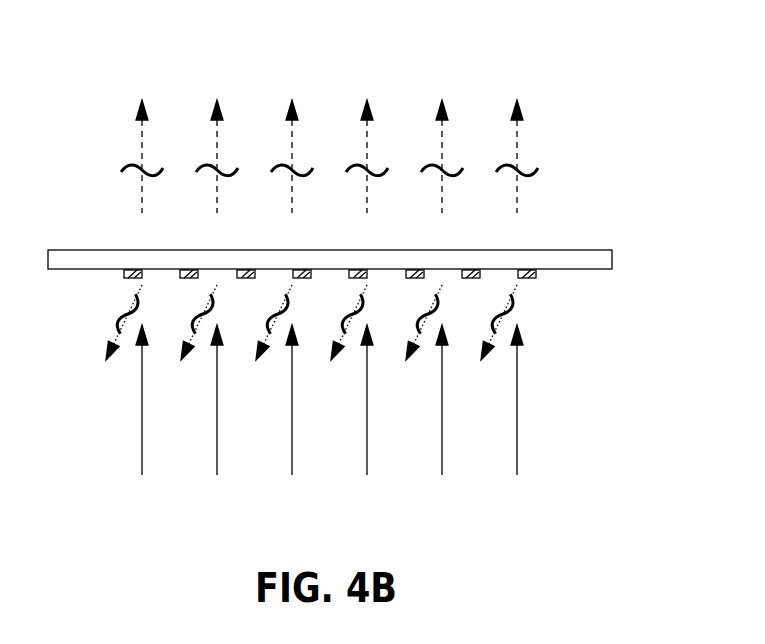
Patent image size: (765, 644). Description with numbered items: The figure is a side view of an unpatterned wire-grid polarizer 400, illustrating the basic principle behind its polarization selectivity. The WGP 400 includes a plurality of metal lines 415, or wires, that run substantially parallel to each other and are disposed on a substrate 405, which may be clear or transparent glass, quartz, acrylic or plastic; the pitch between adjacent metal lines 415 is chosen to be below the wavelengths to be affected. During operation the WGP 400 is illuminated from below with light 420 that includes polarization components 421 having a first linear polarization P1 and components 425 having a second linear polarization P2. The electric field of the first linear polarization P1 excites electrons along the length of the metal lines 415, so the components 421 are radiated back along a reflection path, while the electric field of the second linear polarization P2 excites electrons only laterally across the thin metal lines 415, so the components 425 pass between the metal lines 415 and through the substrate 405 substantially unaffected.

The wire-grid polarizer 400 is at (366, 204).
The substrate 405 is at (612, 253).
The metal lines 415 is at (125, 270).
The light 420 is at (142, 467).
The polarization components 421 is at (322, 344).
The polarization components 425 is at (293, 138).
The first linear polarization P1 is at (513, 310).
The second linear polarization P2 is at (130, 166).